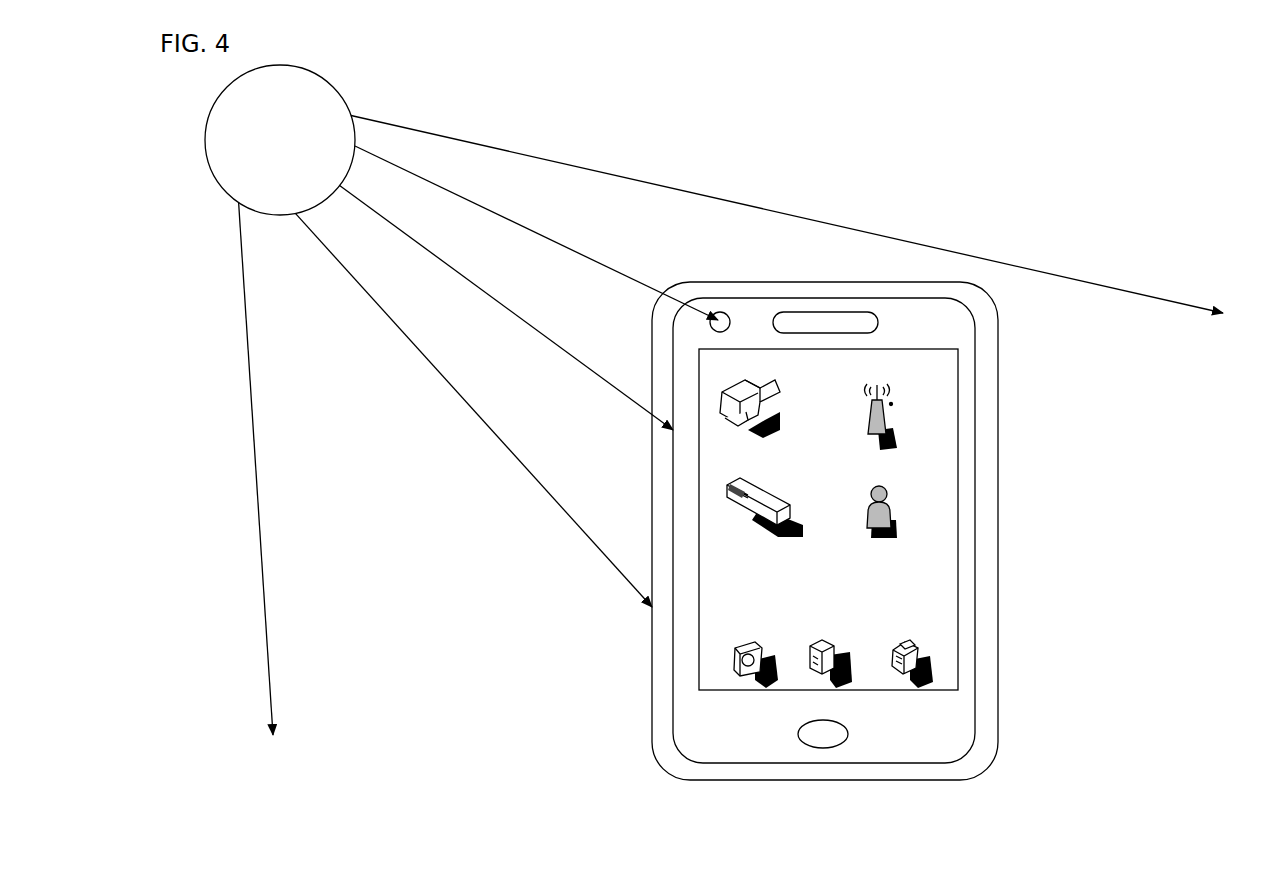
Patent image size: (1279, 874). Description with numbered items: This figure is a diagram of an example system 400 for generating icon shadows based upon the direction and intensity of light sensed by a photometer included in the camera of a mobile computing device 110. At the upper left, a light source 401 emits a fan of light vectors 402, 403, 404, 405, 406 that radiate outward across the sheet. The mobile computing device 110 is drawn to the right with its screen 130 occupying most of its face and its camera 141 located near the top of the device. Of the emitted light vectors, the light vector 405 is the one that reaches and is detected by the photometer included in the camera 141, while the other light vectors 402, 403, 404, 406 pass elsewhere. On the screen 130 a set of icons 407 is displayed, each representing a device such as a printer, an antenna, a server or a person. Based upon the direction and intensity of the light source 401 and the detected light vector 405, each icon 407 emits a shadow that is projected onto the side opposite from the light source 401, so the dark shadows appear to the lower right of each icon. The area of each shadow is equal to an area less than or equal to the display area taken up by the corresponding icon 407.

The system 400 is at (1182, 62).
The light source 401 is at (280, 140).
The light vector 402 is at (252, 410).
The light vector 403 is at (436, 373).
The light vector 404 is at (493, 298).
The light vector 405 is at (522, 226).
The light vector 406 is at (537, 152).
The mobile computing device 110 is at (999, 662).
The camera 141 is at (755, 332).
The screen 130 is at (728, 690).
The icons 407 is at (722, 410).